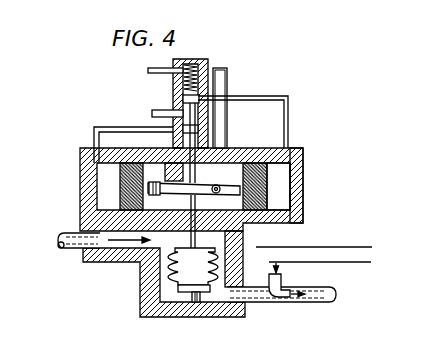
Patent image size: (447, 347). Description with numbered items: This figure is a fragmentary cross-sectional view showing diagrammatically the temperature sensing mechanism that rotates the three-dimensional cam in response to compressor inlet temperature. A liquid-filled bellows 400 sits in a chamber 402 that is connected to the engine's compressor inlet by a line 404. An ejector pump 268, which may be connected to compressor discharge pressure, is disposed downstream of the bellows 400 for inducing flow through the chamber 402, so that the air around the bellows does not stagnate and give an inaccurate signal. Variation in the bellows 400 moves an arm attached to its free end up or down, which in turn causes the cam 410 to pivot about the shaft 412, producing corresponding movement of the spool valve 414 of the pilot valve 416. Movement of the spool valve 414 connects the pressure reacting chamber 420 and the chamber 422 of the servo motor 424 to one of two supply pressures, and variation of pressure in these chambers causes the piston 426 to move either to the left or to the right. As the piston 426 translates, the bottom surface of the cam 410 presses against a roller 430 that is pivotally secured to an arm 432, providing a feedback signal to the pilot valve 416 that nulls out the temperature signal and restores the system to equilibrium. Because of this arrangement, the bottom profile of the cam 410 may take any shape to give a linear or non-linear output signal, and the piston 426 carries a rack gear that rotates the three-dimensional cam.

The liquid-filled bellows 400 is at (162, 303).
The chamber 402 is at (168, 275).
The line 404 is at (72, 248).
The cam 410 is at (171, 184).
The shaft 412 is at (199, 185).
The spool valve 414 is at (173, 100).
The pilot valve 416 is at (237, 82).
The pressure reacting chamber 420 is at (97, 173).
The chamber 422 is at (287, 165).
The servo motor 424 is at (305, 189).
The piston 426 is at (118, 200).
The roller 430 is at (186, 197).
The arm 432 is at (196, 199).
The ejector pump 268 is at (281, 277).